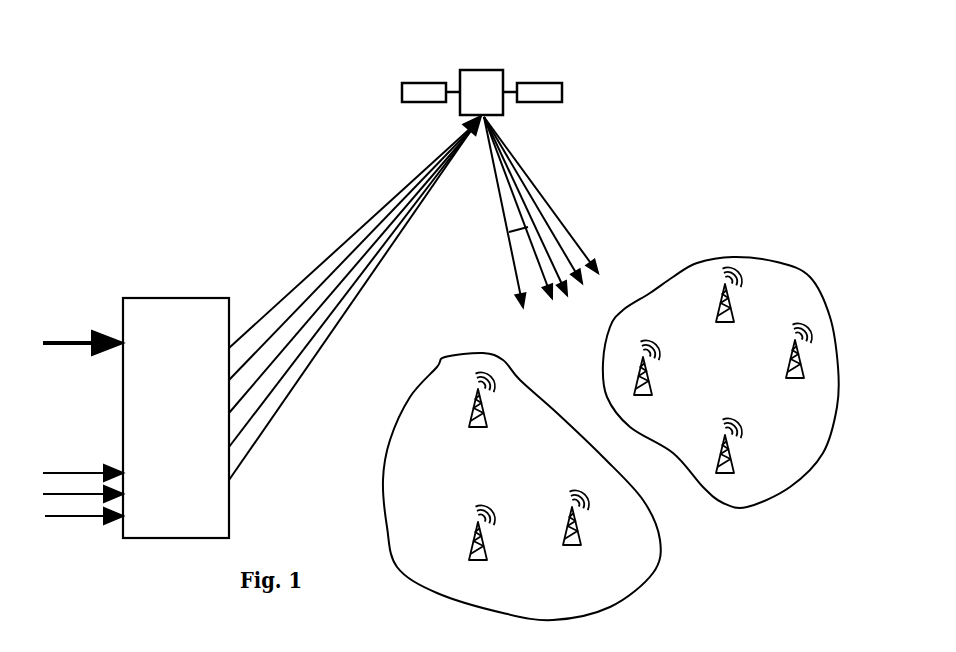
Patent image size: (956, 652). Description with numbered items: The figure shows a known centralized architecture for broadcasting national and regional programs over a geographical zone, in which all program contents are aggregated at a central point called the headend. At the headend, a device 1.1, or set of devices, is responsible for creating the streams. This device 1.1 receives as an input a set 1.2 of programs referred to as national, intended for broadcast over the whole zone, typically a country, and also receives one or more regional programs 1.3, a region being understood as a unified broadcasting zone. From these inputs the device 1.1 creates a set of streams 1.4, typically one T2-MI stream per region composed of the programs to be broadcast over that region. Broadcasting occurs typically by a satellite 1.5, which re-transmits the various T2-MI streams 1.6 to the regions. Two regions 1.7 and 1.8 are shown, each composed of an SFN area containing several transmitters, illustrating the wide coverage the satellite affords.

The device 1.1 is at (218, 536).
The set of national programs 1.2 is at (70, 341).
The regional programs 1.3 is at (82, 516).
The set of streams 1.4 is at (318, 278).
The satellite 1.5 is at (483, 70).
The T2-MI streams 1.6 is at (548, 200).
The region 1.7 is at (439, 488).
The region 1.8 is at (740, 392).